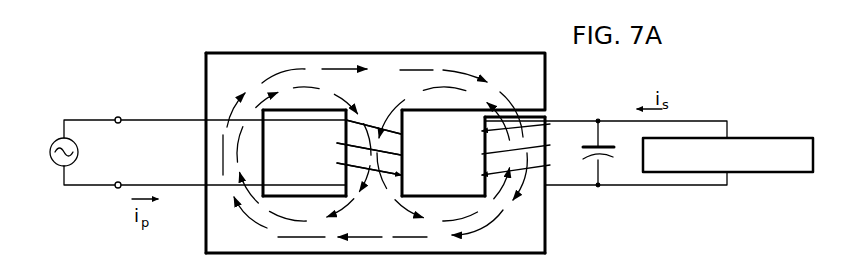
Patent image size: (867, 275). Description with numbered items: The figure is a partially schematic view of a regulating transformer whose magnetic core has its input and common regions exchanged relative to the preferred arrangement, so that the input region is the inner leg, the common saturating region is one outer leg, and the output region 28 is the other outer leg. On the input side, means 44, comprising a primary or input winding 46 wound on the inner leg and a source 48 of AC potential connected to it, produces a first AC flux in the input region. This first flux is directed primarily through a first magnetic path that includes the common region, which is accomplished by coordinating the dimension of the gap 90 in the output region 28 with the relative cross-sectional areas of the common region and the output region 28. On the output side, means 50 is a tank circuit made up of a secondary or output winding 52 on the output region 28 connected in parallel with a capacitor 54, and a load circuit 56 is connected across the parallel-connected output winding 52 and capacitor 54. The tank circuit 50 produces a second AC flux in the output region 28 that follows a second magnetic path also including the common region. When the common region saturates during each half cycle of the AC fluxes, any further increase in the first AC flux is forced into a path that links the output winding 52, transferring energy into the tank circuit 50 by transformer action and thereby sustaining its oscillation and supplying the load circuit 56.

The output region 28 is at (547, 190).
The means 44 is at (142, 164).
The primary or input winding 46 is at (343, 143).
The source of AC potential 48 is at (57, 138).
The means 50 is at (577, 146).
The secondary or output winding 52 is at (480, 132).
The capacitor 54 is at (613, 157).
The load circuit 56 is at (763, 138).
The gap 90 is at (547, 117).